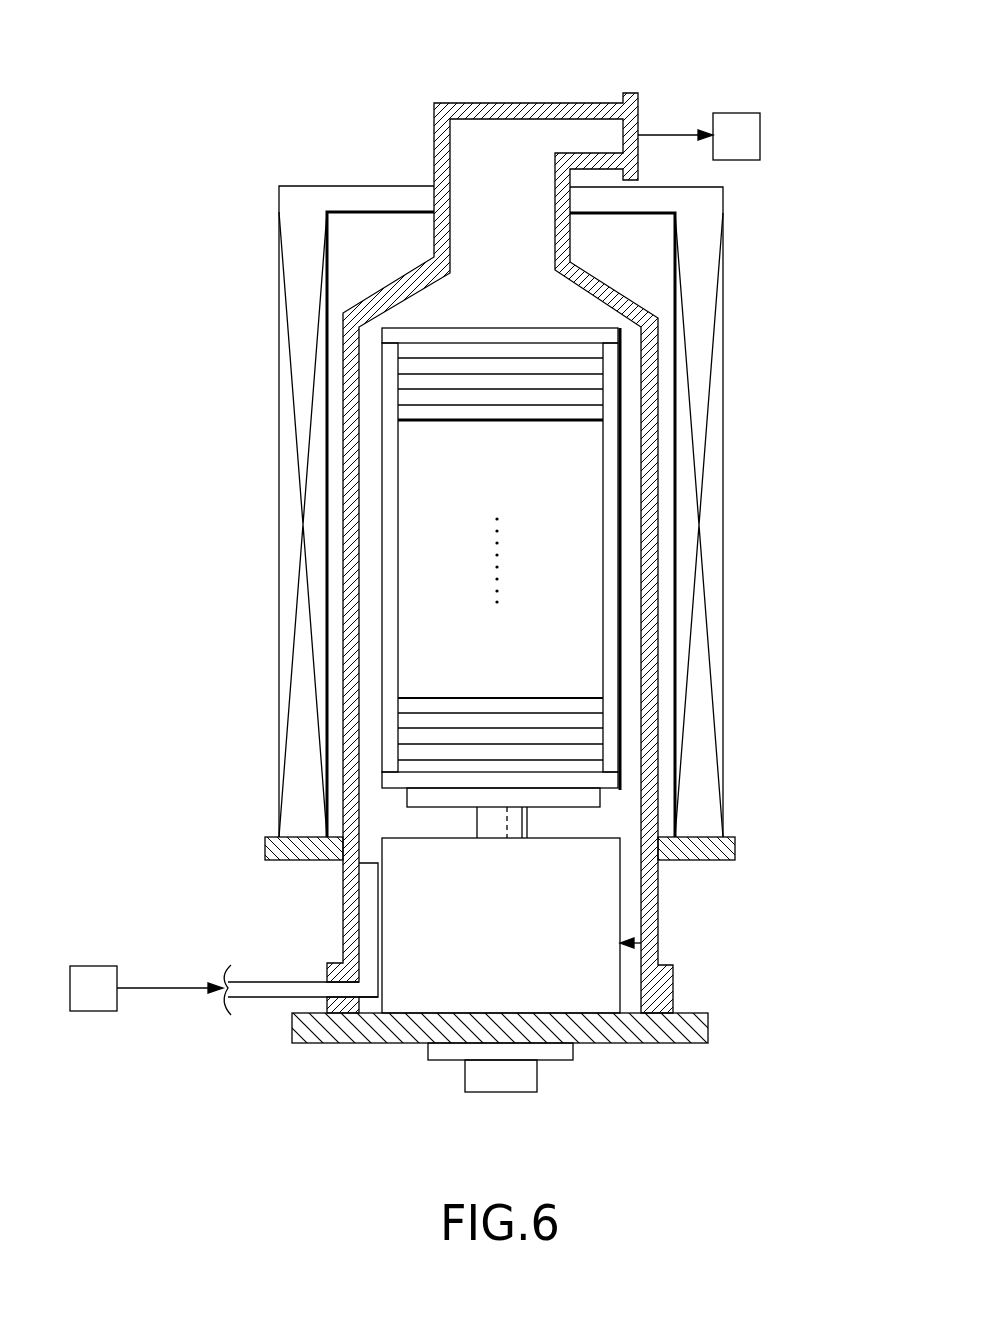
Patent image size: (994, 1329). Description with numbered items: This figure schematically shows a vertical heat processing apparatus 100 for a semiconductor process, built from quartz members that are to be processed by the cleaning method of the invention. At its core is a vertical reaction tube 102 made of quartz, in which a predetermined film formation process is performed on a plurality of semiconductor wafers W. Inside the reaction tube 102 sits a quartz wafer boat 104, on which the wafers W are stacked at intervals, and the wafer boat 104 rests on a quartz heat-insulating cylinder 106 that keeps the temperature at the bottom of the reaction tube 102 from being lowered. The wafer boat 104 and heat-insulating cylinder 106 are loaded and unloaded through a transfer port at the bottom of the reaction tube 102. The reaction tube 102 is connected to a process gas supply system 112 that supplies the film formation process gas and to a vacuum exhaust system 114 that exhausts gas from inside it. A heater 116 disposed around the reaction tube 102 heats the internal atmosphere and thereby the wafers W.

The processing apparatus 100 is at (695, 94).
The reaction tube 102 is at (658, 445).
The wafer boat 104 is at (622, 650).
The heat-insulating cylinder 106 is at (657, 930).
The process gas supply system 112 is at (88, 966).
The vacuum exhaust system 114 is at (760, 135).
The heater 116 is at (707, 547).
The wafers W is at (424, 706).